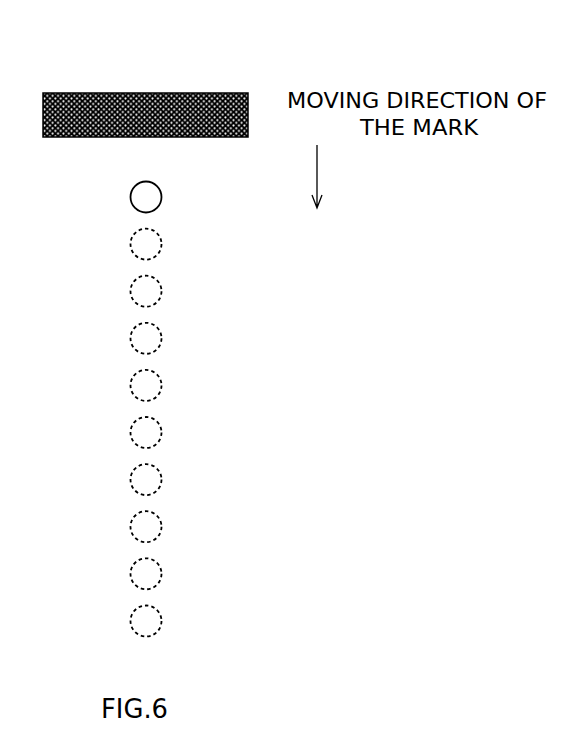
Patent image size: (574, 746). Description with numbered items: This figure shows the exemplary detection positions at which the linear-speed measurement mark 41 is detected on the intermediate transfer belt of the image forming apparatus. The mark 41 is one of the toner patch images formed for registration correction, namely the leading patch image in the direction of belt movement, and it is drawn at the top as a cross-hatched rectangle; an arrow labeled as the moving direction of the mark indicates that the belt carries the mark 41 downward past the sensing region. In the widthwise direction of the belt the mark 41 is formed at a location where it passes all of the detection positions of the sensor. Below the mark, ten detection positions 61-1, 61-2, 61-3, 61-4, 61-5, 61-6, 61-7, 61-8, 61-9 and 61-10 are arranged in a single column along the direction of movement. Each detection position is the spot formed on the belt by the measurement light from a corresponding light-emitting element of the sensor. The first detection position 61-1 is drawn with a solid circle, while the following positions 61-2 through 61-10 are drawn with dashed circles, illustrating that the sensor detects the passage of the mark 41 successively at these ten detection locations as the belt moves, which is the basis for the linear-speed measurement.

The linear-speed measurement mark 41 is at (201, 93).
The detection position 61-1 is at (130, 195).
The detection position 61-2 is at (131, 244).
The detection position 61-3 is at (131, 291).
The detection position 61-4 is at (131, 338).
The detection position 61-5 is at (131, 385).
The detection position 61-6 is at (131, 432).
The detection position 61-7 is at (131, 479).
The detection position 61-8 is at (131, 526).
The detection position 61-9 is at (131, 573).
The detection position 61-10 is at (131, 621).